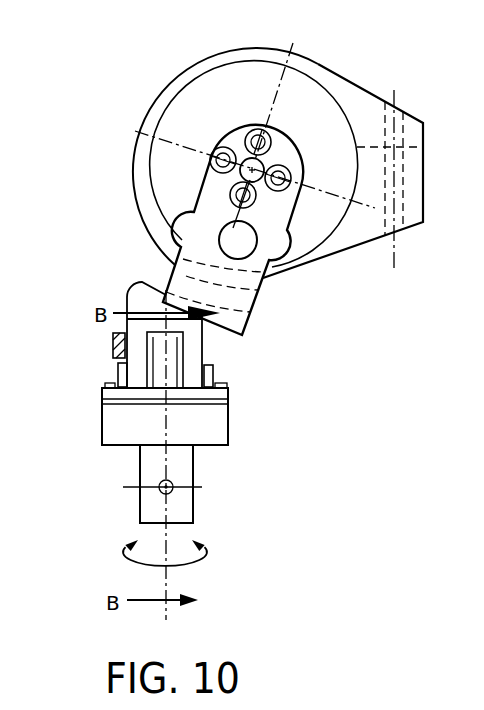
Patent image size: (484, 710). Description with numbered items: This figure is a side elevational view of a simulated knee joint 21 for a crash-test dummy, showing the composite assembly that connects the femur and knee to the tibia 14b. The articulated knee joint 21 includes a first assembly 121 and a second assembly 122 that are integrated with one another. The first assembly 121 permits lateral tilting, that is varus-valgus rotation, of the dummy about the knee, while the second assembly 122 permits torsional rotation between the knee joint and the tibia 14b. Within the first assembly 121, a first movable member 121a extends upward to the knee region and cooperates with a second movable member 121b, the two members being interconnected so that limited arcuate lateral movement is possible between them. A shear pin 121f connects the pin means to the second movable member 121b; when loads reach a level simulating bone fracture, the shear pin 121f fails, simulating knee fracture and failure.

The simulated knee joint 21 is at (343, 62).
The first movable member 121a is at (300, 277).
The first assembly 121 is at (194, 350).
The second movable member 121b is at (135, 365).
The shear pin 121f is at (117, 350).
The second assembly 122 is at (221, 428).
The tibia 14b is at (197, 478).